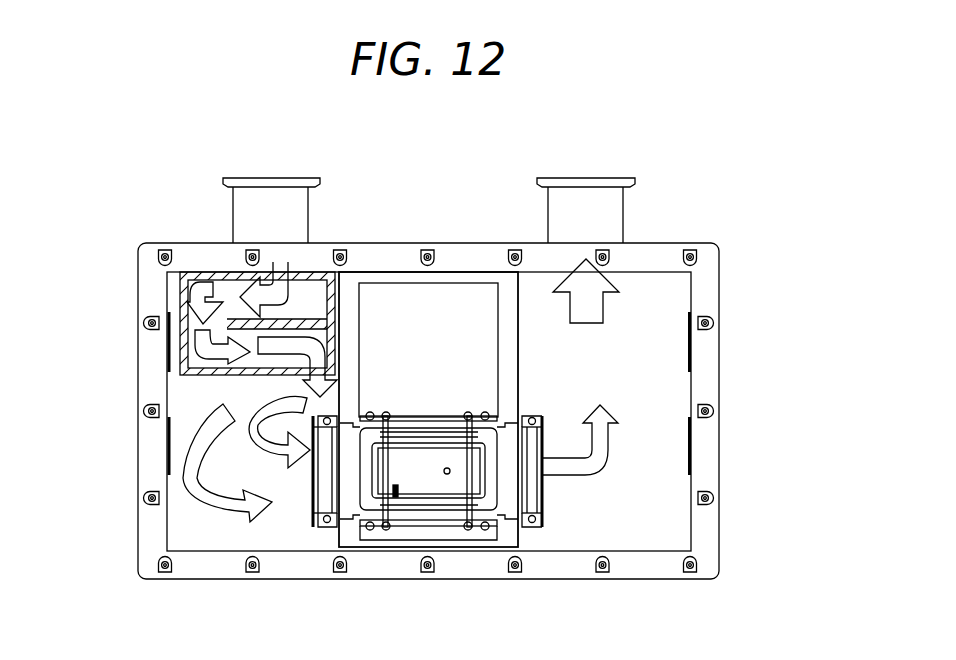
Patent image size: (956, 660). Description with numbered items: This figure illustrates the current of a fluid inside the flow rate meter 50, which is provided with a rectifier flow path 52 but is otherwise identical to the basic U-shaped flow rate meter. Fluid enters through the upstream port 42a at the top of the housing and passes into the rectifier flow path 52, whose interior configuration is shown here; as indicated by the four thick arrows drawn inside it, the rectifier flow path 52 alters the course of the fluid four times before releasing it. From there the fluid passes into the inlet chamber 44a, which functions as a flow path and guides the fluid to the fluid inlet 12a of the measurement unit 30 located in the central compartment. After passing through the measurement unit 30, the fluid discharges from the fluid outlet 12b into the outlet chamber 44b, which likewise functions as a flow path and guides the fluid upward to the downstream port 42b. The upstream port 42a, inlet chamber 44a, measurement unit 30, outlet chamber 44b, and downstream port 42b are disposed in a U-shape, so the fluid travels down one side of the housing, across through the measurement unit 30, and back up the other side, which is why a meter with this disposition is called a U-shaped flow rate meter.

The flow rate meter 50 is at (727, 230).
The upstream port 42a is at (283, 178).
The downstream port 42b is at (597, 178).
The rectifier flow path 52 is at (190, 343).
The inlet chamber 44a is at (192, 533).
The outlet chamber 44b is at (647, 518).
The fluid inlet 12a is at (313, 497).
The fluid outlet 12b is at (543, 495).
The measurement unit 30 is at (407, 526).